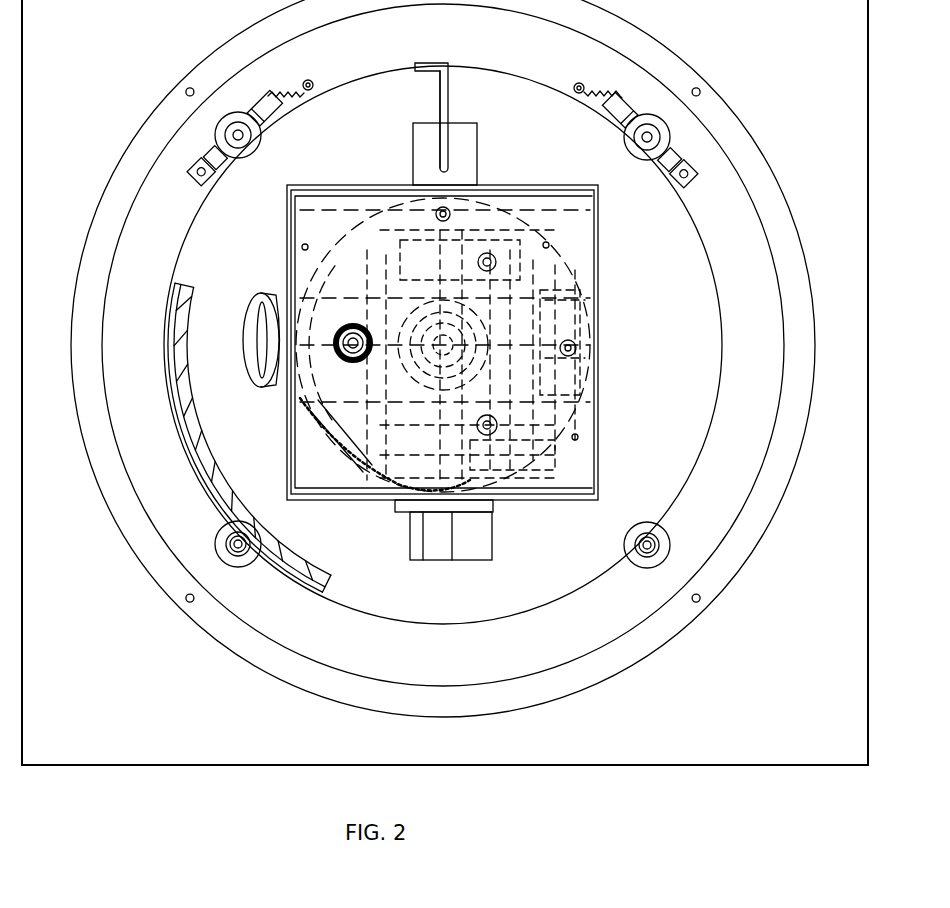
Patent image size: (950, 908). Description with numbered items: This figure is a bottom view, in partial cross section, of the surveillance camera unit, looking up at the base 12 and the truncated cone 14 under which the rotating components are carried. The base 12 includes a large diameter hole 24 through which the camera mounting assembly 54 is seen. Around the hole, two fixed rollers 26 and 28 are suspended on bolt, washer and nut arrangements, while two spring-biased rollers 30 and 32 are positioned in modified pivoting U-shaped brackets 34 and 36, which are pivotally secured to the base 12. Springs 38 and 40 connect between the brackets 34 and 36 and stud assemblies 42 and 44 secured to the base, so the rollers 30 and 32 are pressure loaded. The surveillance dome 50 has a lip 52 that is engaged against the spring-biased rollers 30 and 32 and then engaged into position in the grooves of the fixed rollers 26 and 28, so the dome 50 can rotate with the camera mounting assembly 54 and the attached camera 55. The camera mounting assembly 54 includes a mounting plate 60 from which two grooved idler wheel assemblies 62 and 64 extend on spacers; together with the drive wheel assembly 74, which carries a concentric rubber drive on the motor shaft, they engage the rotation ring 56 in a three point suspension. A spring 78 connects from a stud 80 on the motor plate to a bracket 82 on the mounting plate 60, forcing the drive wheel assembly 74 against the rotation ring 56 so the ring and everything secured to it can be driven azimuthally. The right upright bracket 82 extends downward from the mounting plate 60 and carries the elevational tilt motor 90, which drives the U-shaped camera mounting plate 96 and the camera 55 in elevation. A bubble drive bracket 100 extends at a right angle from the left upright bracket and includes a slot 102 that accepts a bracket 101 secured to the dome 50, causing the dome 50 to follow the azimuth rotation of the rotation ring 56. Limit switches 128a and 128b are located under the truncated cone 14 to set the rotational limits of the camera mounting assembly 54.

The base 12 is at (262, 766).
The truncated cone 14 is at (683, 72).
The large diameter hole 24 is at (722, 362).
The fixed roller 26 is at (645, 568).
The fixed roller 28 is at (216, 540).
The spring-biased roller 30 is at (624, 147).
The spring-biased roller 32 is at (218, 132).
The modified pivotal U-shaped bracket 34 is at (688, 182).
The modified pivotal U-shaped bracket 36 is at (196, 166).
The spring 38 is at (604, 98).
The spring 40 is at (268, 98).
The stud assembly 42 is at (575, 84).
The stud assembly 44 is at (311, 81).
The surveillance dome 50 is at (233, 437).
The lip 52 is at (190, 456).
The camera mounting assembly 54 is at (238, 361).
The camera 55 is at (246, 325).
The rotation ring 56 is at (378, 206).
The mounting plate 60 is at (588, 288).
The grooved idler wheel assembly 62 is at (543, 446).
The grooved idler wheel assembly 64 is at (590, 265).
The drive wheel assembly 74 is at (445, 345).
The spring 78 is at (346, 442).
The stud 80 is at (290, 435).
The right upright bracket 82 is at (393, 503).
The elevational tilt motor 90 is at (488, 538).
The U-shaped camera mounting plate 96 is at (530, 268).
The bubble drive bracket 100 is at (470, 128).
The bracket 101 is at (448, 86).
The slot 102 is at (440, 140).
The limit switch 128a is at (586, 310).
The limit switch 128b is at (598, 357).